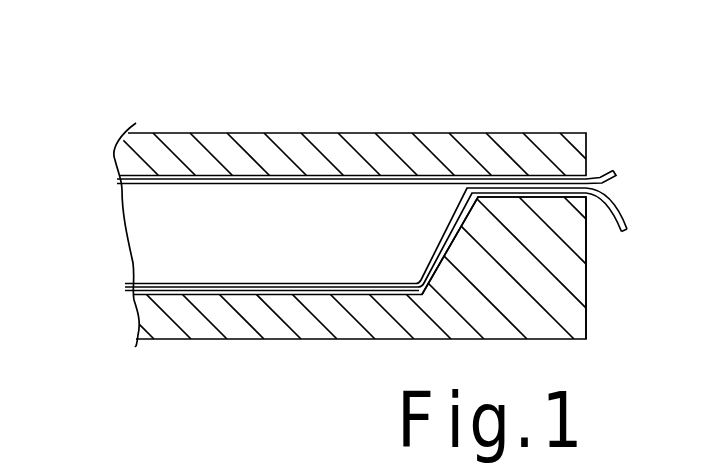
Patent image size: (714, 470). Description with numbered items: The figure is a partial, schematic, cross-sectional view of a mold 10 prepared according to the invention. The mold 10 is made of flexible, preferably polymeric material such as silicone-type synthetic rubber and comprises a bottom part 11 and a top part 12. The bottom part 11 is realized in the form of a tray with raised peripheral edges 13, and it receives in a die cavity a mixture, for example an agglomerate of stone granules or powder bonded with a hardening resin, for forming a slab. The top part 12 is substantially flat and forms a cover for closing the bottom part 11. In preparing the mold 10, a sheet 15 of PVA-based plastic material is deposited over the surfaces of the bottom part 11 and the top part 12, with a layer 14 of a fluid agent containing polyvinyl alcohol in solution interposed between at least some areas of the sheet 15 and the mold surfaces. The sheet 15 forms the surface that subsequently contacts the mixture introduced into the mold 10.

The mold 10 is at (590, 94).
The bottom part 11 is at (290, 332).
The top part 12 is at (290, 145).
The raised peripheral edges 13 is at (568, 223).
The layer of fluid agent containing PVA 14 is at (118, 178).
The sheet of PVA-based plastic material 15 is at (123, 194).